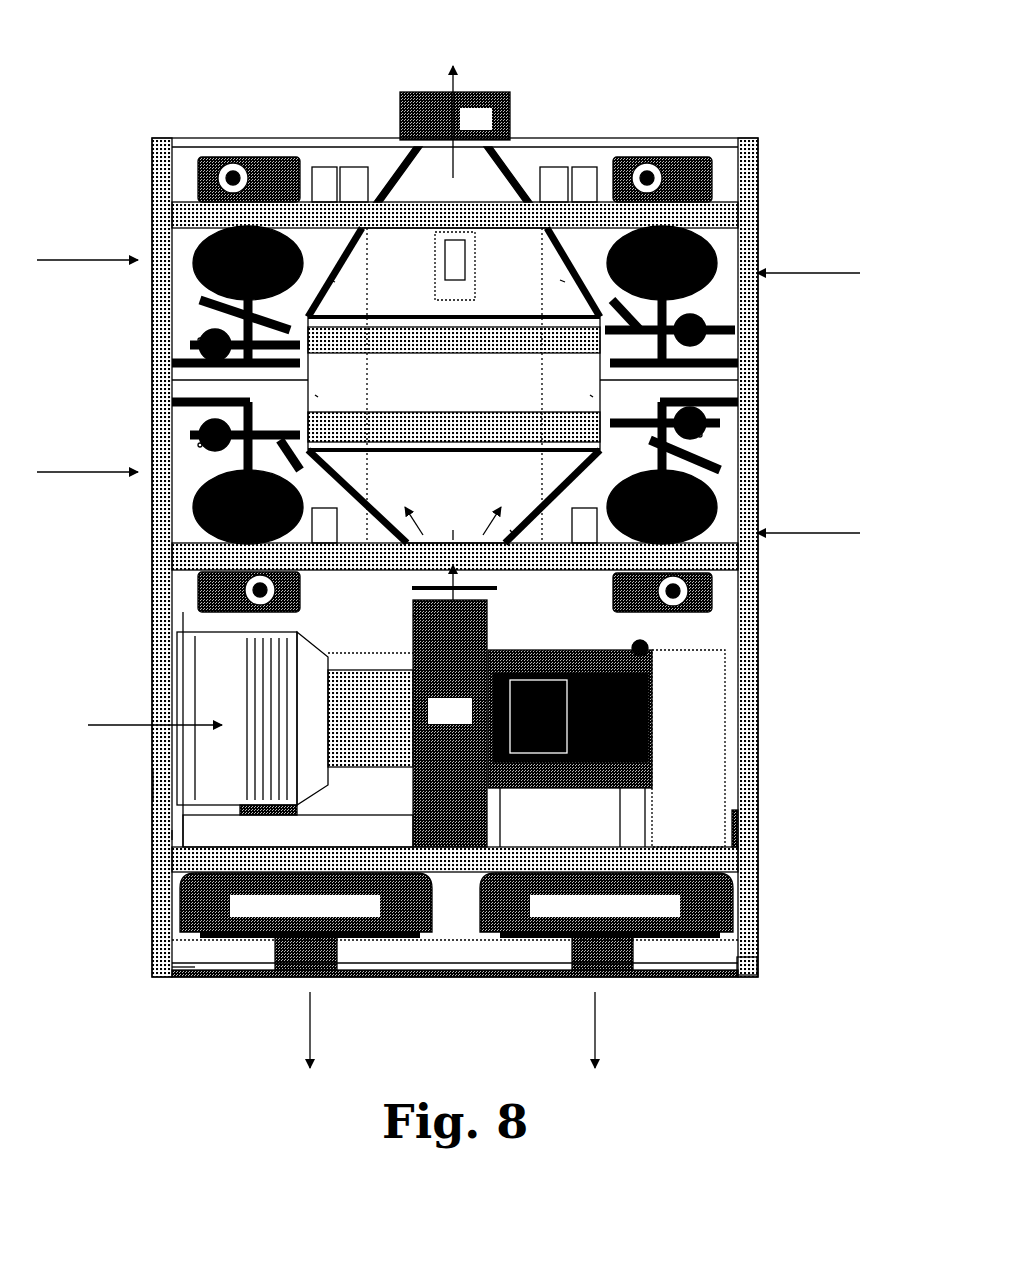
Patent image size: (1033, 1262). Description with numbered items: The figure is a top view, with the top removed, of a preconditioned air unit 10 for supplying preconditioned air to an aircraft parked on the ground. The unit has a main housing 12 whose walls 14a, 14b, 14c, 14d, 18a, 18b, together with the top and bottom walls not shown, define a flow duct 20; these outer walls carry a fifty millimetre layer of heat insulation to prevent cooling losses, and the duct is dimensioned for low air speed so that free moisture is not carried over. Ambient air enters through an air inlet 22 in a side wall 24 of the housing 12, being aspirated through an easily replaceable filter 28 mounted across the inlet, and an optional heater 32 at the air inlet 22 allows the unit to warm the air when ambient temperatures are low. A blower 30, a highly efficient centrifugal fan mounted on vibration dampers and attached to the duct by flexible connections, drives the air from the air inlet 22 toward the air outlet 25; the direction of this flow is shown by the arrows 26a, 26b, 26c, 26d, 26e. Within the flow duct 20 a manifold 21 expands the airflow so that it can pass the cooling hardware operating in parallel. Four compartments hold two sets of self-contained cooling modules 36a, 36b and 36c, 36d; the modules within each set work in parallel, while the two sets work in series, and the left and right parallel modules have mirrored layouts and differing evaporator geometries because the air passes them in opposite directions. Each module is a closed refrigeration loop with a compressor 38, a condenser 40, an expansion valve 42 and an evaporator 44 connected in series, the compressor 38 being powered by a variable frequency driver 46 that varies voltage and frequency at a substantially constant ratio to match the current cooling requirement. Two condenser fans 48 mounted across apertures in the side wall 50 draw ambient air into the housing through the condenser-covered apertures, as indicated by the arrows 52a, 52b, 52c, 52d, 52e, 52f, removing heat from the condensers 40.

The preconditioned air unit 10 is at (200, 92).
The housing 12 is at (658, 138).
The wall 14a is at (365, 268).
The wall 14b is at (318, 388).
The wall 14c is at (598, 385).
The wall 14d is at (516, 270).
The wall 18a is at (360, 488).
The wall 18b is at (545, 488).
The flow duct 20 is at (460, 396).
The manifold 21 is at (464, 520).
The air inlet 22 is at (150, 740).
The side wall 24 is at (170, 834).
The air outlet 25 is at (486, 131).
The arrow 26a is at (86, 680).
The arrow 26b is at (412, 618).
The arrow 26c is at (388, 540).
The arrow 26d is at (522, 540).
The arrow 26e is at (458, 92).
The filter 28 is at (150, 795).
The blower 30 is at (461, 719).
The heater 32 is at (300, 807).
The self-contained cooling module 36a is at (203, 333).
The self-contained cooling module 36b is at (731, 316).
The self-contained cooling module 36c is at (203, 468).
The self-contained cooling module 36d is at (744, 450).
The compressor 38 is at (455, 385).
The condenser 40 is at (152, 305).
The expansion valve 42 is at (200, 345).
The evaporator 44 is at (376, 347).
The variable frequency driver 46 is at (210, 168).
The condenser fan 48 is at (315, 920).
The side wall 50 is at (193, 967).
The arrow 52a is at (78, 255).
The arrow 52b is at (75, 468).
The arrow 52c is at (813, 530).
The arrow 52d is at (815, 270).
The arrow 52e is at (310, 1030).
The arrow 52f is at (597, 1032).